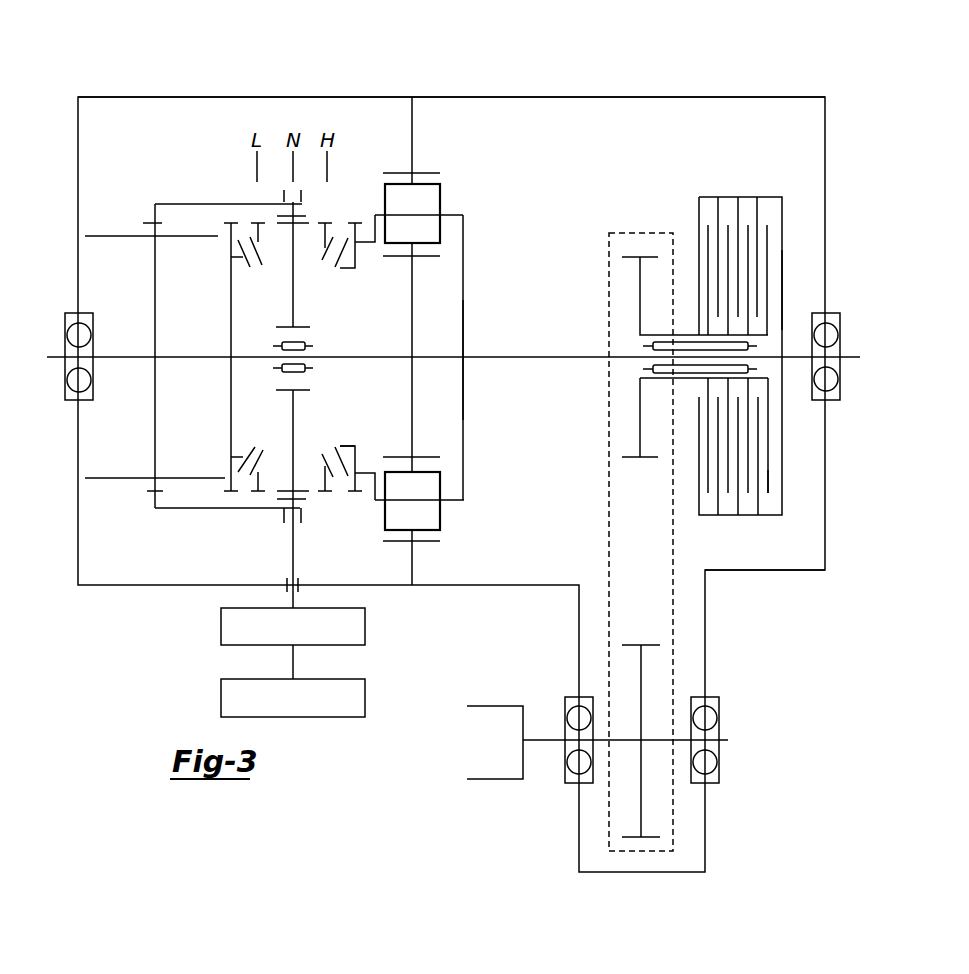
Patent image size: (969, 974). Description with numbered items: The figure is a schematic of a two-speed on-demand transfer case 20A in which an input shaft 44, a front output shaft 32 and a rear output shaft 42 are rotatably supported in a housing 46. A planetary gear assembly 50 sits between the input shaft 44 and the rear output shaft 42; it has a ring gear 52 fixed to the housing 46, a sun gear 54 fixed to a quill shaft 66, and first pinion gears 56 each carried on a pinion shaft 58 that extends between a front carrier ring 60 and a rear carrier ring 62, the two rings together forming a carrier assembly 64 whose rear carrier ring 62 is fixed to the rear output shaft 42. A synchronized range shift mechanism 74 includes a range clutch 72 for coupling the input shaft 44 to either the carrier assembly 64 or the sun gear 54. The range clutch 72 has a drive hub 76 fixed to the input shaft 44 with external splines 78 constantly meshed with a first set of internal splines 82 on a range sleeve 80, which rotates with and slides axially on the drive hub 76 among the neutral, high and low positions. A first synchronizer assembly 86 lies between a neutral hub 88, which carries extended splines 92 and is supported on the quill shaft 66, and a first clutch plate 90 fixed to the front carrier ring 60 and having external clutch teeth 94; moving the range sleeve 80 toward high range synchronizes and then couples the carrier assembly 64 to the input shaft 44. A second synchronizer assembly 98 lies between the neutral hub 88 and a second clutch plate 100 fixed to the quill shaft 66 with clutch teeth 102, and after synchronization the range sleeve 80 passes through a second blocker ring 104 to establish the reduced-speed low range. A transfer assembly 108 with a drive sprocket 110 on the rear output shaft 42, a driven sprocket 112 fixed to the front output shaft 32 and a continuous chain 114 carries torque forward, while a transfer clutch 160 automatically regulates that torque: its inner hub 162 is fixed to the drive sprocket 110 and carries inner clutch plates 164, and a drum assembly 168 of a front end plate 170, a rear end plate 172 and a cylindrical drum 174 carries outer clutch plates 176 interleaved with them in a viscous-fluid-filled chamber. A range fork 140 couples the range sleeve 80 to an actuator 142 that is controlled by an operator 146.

The transfer case 20A is at (744, 76).
The housing 46 is at (702, 97).
The input shaft 44 is at (58, 356).
The rear output shaft 42 is at (852, 357).
The front output shaft 32 is at (538, 738).
The planetary gear assembly 50 is at (534, 178).
The ring gear 52 is at (427, 172).
The sun gear 54 is at (412, 312).
The first pinion gears 56 is at (423, 198).
The pinion shaft 58 is at (447, 213).
The front carrier ring 60 is at (375, 215).
The rear carrier ring 62 is at (464, 226).
The carrier assembly 64 is at (466, 206).
The quill shaft 66 is at (350, 357).
The range clutch 72 is at (270, 532).
The synchronized range shift mechanism 74 is at (176, 630).
The drive hub 76 is at (155, 310).
The external splines 78 is at (120, 236).
The range sleeve 80 is at (227, 203).
The first set of internal splines 82 is at (150, 223).
The first synchronizer assembly 86 is at (362, 437).
The neutral hub 88 is at (293, 270).
The first clutch plate 90 is at (355, 262).
The extended splines 92 is at (308, 223).
The external clutch teeth 94 is at (350, 491).
The second synchronizer assembly 98 is at (256, 440).
The second clutch plate 100 is at (231, 345).
The external clutch teeth 102 is at (230, 510).
The second blocker ring 104 is at (258, 241).
The transfer assembly 108 is at (682, 592).
The drive sprocket 110 is at (640, 295).
The driven sprocket 112 is at (641, 680).
The continuous chain 114 is at (675, 570).
The range fork 140 is at (312, 535).
The actuator 142 is at (365, 645).
The operator 146 is at (365, 717).
The transfer clutch 160 is at (730, 185).
The inner hub 162 is at (683, 337).
The inner clutch plates 164 is at (768, 242).
The drum assembly 168 is at (768, 182).
The front end plate 170 is at (697, 205).
The rear end plate 172 is at (803, 286).
The drum 174 is at (755, 515).
The outer clutch plates 176 is at (775, 500).